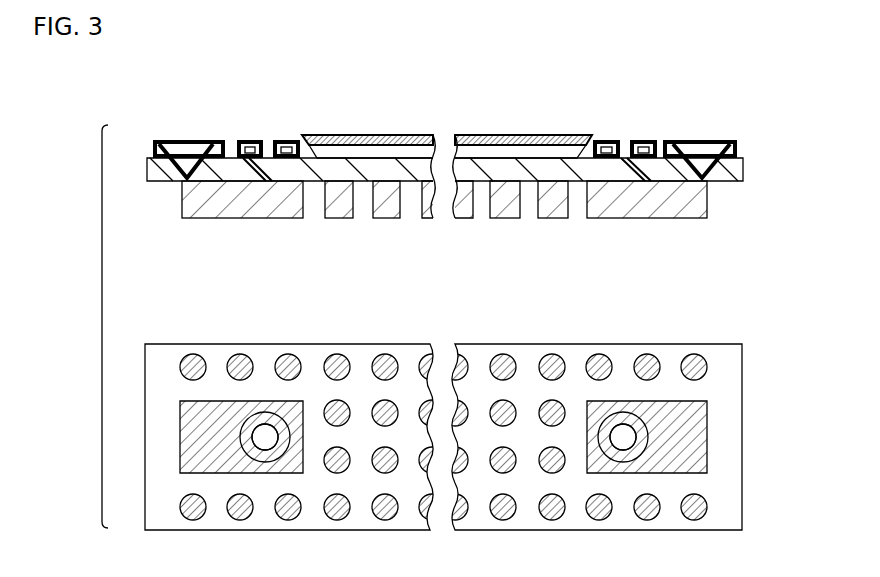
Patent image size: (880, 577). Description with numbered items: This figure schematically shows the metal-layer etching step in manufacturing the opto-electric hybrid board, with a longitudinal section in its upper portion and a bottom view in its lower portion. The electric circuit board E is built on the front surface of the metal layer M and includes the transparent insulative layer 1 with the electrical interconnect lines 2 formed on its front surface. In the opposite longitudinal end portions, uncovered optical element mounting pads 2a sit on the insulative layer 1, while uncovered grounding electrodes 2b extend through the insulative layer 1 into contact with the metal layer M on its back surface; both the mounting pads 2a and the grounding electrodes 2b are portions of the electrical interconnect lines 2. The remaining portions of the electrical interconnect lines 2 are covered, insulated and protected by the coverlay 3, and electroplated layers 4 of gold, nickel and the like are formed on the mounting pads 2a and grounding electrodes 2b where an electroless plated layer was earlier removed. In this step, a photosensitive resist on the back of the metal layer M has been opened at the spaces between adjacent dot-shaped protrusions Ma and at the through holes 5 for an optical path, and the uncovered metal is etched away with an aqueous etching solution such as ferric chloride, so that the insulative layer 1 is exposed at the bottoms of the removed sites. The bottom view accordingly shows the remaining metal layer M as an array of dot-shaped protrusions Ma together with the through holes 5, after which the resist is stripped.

The insulative layer 1 is at (158, 183).
The electrical interconnect lines 2 is at (490, 135).
The optical element mounting pads 2a is at (281, 140).
The grounding electrodes 2b is at (166, 140).
The coverlay 3 is at (507, 145).
The electroplated layers 4 is at (237, 141).
The through holes for an optical path 5 is at (250, 428).
The metal layer M is at (300, 407).
The dot-shaped protrusions Ma is at (502, 357).
The electric circuit board E is at (762, 136).